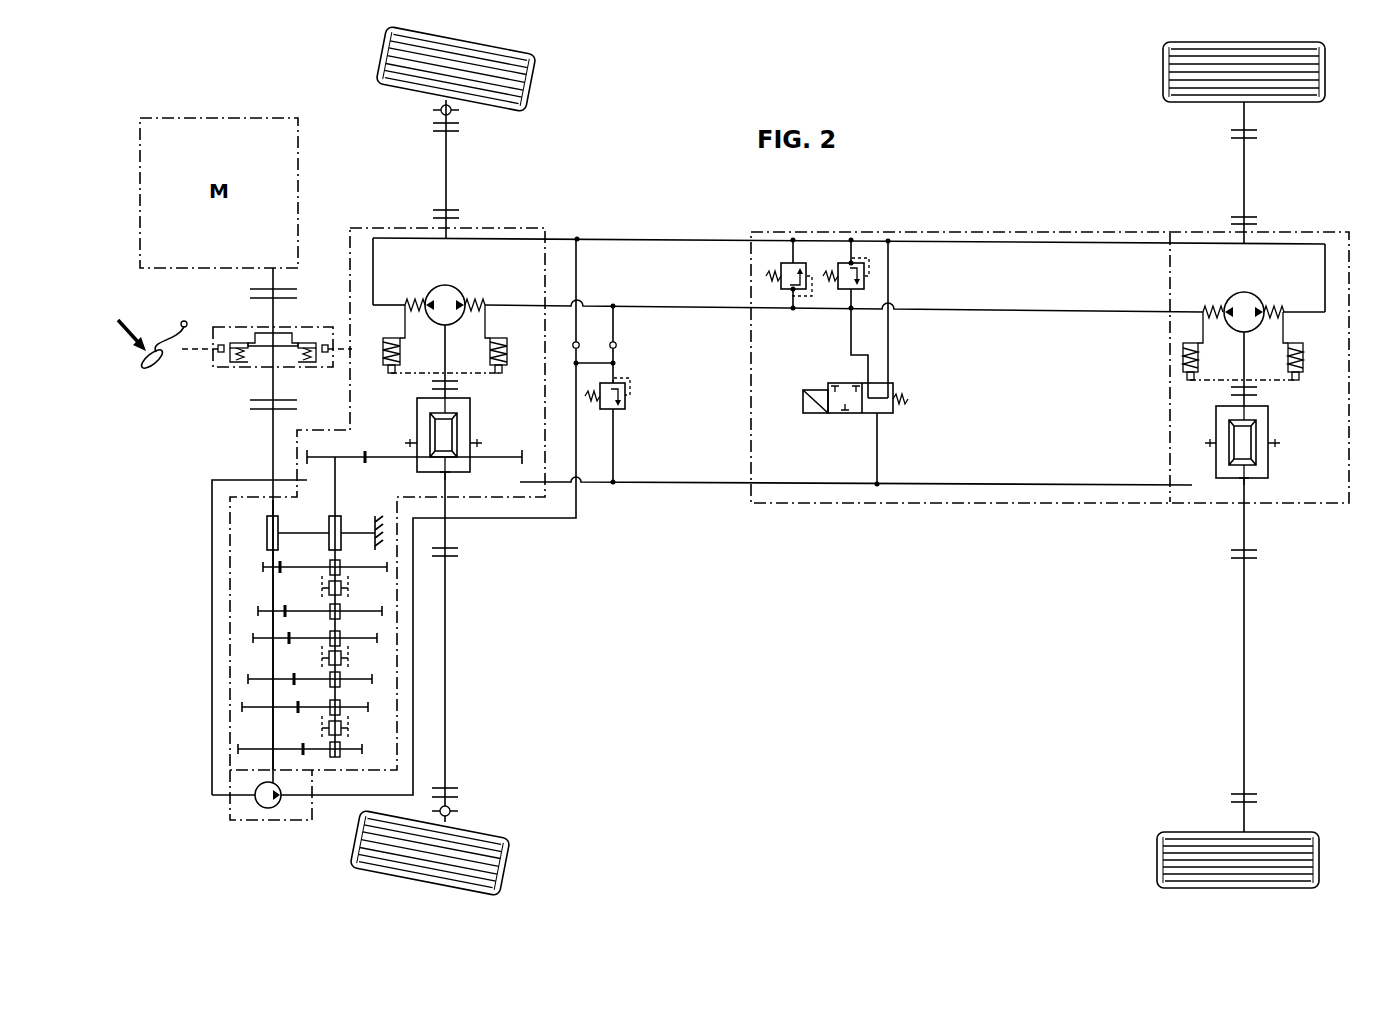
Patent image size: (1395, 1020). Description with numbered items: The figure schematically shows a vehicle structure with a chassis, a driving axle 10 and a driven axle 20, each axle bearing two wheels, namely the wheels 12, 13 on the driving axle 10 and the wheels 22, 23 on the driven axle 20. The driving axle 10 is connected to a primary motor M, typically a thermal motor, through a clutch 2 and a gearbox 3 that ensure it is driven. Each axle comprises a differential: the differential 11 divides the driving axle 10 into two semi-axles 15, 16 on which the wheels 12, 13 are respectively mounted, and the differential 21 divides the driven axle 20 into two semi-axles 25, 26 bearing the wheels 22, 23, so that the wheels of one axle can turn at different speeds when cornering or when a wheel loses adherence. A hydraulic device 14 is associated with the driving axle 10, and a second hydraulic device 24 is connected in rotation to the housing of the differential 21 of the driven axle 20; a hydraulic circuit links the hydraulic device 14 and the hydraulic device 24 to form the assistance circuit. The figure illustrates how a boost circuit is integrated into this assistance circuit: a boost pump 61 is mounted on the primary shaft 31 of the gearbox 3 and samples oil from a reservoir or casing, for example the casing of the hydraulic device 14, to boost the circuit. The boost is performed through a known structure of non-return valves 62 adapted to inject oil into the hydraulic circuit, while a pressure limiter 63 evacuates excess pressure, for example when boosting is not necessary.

The clutch 2 is at (248, 374).
The gearbox 3 is at (229, 610).
The driving axle 10 is at (468, 627).
The differential 11 is at (482, 416).
The wheel 12 is at (536, 76).
The wheel 13 is at (506, 862).
The hydraulic device 14 is at (466, 284).
The semi-axle 15 is at (448, 175).
The semi-axle 16 is at (447, 706).
The driven axle 20 is at (1268, 632).
The differential 21 is at (1282, 418).
The wheel 22 is at (1326, 70).
The wheel 23 is at (1322, 853).
The second hydraulic device 24 is at (1264, 284).
The semi-axle 25 is at (1248, 185).
The semi-axle 26 is at (1246, 710).
The primary shaft 31 is at (268, 730).
The boost pump 61 is at (260, 810).
The non-return valves 62 is at (579, 343).
The pressure limiter 63 is at (634, 387).